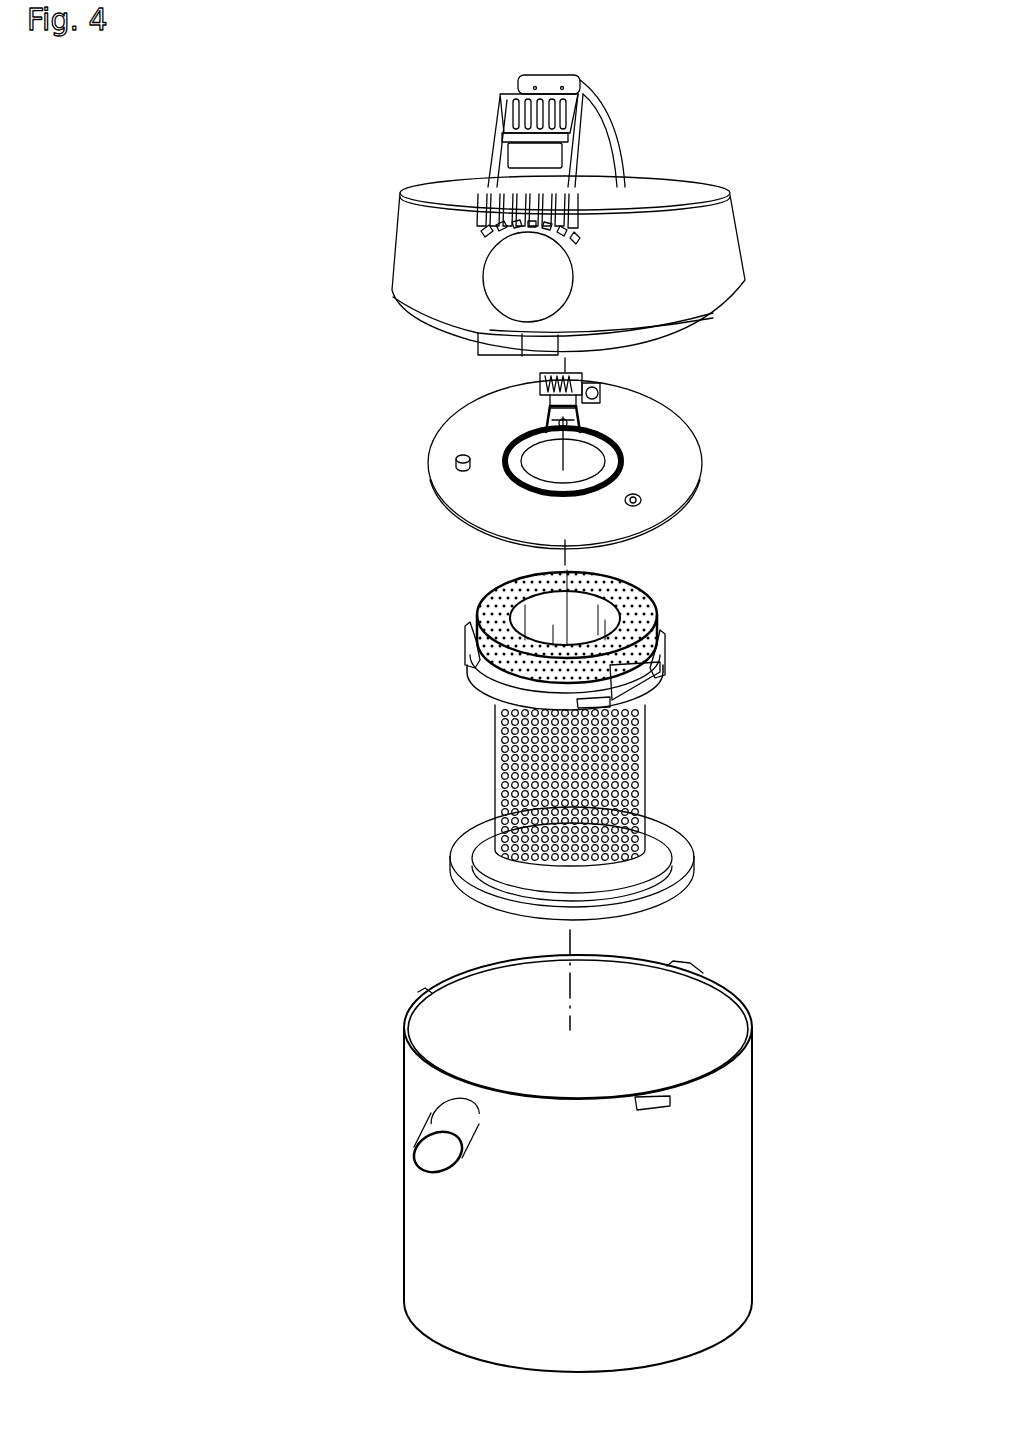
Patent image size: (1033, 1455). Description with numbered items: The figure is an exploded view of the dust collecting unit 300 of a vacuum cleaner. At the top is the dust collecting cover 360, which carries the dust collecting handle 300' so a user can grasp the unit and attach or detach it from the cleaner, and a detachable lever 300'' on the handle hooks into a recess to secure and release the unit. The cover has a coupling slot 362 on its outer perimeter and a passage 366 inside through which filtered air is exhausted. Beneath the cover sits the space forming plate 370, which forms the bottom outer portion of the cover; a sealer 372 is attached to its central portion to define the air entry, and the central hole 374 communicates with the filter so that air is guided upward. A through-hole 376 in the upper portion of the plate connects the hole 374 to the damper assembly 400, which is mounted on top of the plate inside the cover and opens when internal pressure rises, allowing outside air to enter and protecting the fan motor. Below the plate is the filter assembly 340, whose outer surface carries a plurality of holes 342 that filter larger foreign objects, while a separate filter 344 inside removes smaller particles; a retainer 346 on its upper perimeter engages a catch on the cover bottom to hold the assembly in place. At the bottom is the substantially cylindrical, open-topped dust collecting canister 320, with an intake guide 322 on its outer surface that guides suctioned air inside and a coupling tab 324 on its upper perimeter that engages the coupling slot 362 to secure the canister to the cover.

The dust collecting unit 300 is at (109, 727).
The dust collecting handle 300' is at (643, 133).
The detachable lever 300'' is at (631, 71).
The dust collecting canister 320 is at (519, 1143).
The intake guide 322 is at (436, 1138).
The coupling tab 324 is at (692, 965).
The filter assembly 340 is at (482, 800).
The holes 342 is at (647, 790).
The filter 344 is at (640, 604).
The retainer 346 is at (610, 705).
The dust collecting cover 360 is at (513, 266).
The coupling slot 362 is at (540, 347).
The passage 366 is at (537, 307).
The space forming plate 370 is at (495, 471).
The sealer 372 is at (622, 436).
The hole 374 is at (585, 465).
The through-hole 376 is at (525, 483).
The damper assembly 400 is at (503, 391).